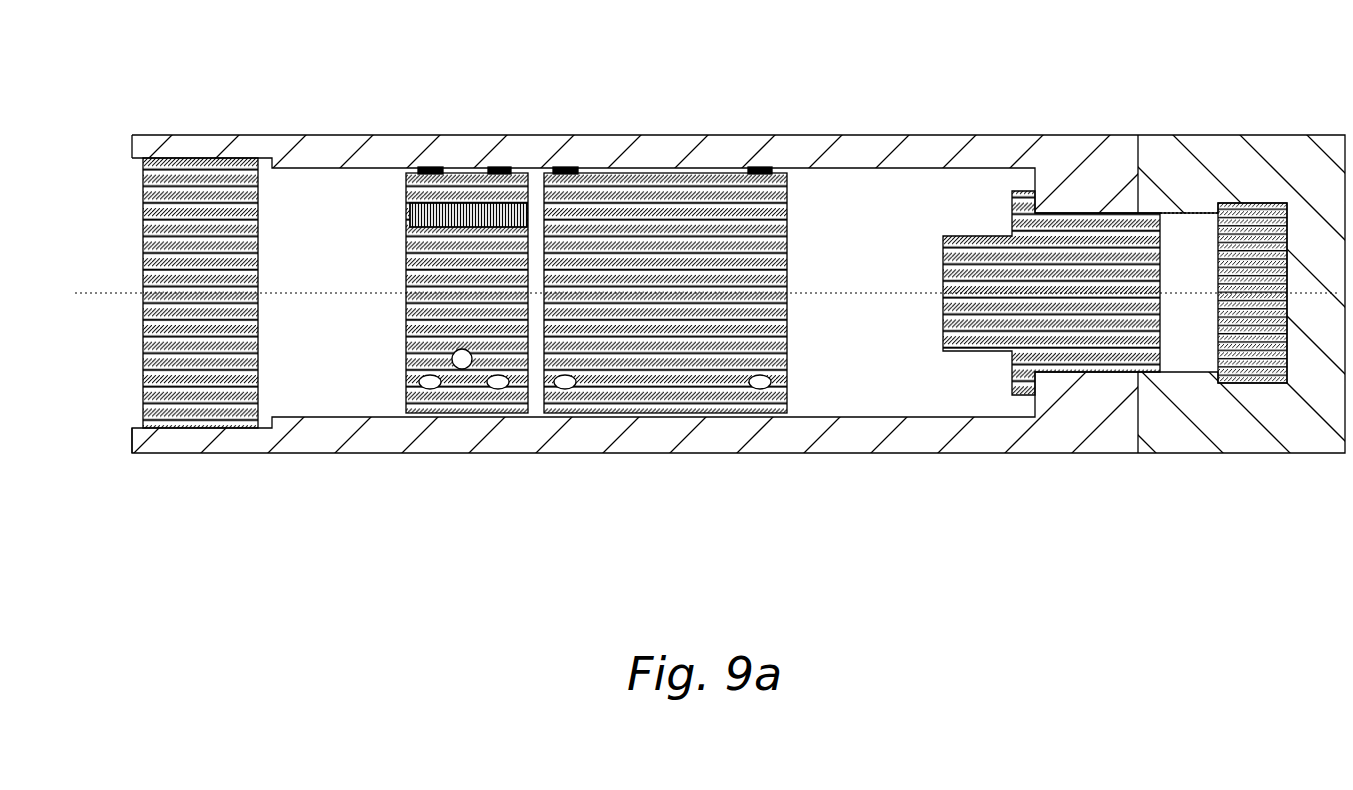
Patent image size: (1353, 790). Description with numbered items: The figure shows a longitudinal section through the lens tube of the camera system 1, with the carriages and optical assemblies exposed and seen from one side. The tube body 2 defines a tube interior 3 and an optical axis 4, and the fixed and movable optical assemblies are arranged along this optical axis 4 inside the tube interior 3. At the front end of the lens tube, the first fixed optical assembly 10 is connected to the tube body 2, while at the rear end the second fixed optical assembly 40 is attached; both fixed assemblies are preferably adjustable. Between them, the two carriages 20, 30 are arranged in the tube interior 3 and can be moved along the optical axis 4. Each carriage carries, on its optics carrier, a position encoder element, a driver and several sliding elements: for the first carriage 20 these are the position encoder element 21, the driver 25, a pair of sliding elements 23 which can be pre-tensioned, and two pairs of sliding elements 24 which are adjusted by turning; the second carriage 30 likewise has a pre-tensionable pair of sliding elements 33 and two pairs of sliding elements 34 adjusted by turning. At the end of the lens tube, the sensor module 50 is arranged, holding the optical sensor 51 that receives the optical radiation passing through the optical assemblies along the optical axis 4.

The camera system 1 is at (187, 108).
The tube body 2 is at (852, 430).
The tube interior 3 is at (848, 345).
The optical axis 4 is at (888, 283).
The first fixed optical assembly 10 is at (187, 173).
The carriage 20 is at (460, 187).
The position encoder element 21 is at (407, 235).
The pair of sliding elements 23 is at (490, 167).
The pairs of sliding elements 24 is at (498, 380).
The driver 25 is at (462, 360).
The carriage 30 is at (655, 185).
The pair of sliding elements 33 is at (747, 170).
The pairs of sliding elements 34 is at (565, 380).
The second fixed optical assembly 40 is at (1020, 190).
The sensor module 50 is at (1193, 412).
The optical sensor 51 is at (1248, 255).